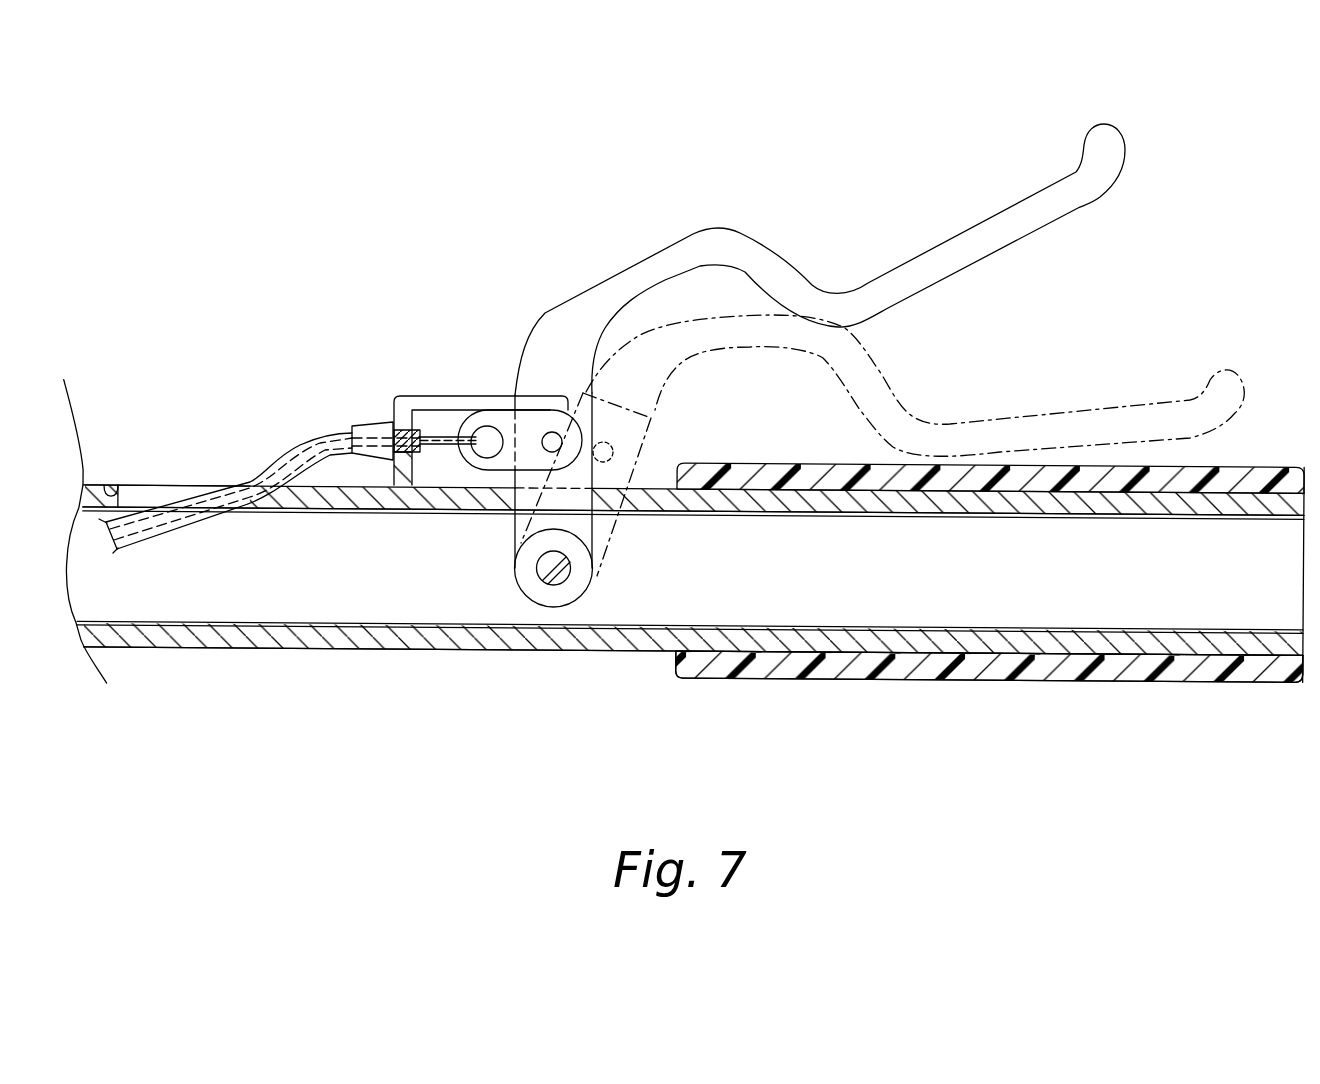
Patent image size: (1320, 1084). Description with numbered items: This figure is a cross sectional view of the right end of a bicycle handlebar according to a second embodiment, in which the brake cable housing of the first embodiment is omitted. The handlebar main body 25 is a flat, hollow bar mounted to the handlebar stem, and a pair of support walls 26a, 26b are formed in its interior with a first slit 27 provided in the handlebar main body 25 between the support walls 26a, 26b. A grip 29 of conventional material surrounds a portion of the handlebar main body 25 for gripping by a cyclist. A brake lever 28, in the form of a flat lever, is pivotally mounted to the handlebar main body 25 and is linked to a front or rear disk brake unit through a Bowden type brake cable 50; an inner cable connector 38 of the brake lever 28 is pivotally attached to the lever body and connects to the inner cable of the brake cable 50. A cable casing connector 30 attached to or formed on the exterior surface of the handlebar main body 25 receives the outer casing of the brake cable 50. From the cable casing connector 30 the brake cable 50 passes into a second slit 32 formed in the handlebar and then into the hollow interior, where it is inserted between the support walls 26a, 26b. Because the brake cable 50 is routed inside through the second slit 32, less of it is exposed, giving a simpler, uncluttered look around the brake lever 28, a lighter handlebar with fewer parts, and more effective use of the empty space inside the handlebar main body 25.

The handlebar main body 25 is at (977, 652).
The support wall 26a is at (827, 595).
The support wall 26b is at (827, 595).
The first slit 27 is at (628, 504).
The brake lever 28 is at (868, 250).
The grip 29 is at (1132, 676).
The cable casing connector 30 is at (423, 403).
The second slit 32 is at (119, 485).
The inner cable connector 38 is at (528, 430).
The brake cable 50 is at (273, 452).